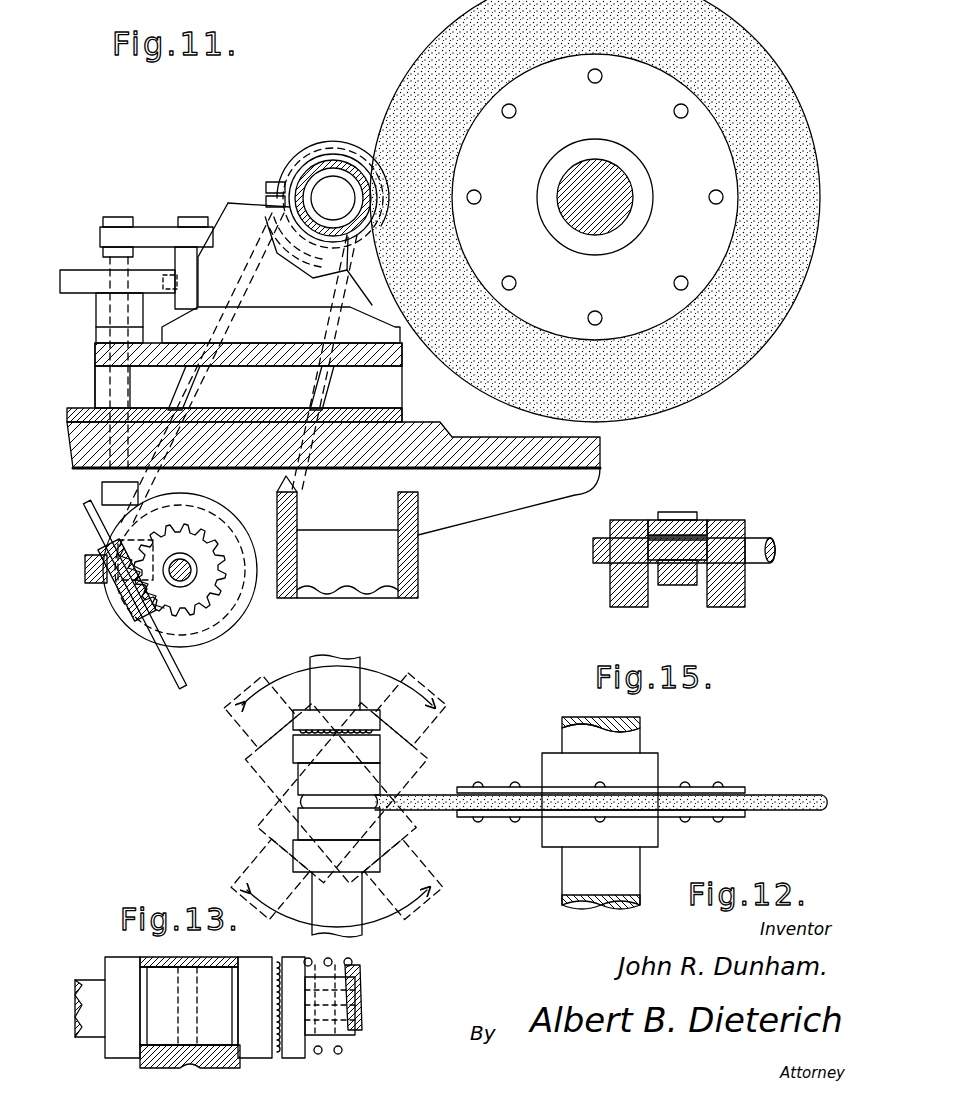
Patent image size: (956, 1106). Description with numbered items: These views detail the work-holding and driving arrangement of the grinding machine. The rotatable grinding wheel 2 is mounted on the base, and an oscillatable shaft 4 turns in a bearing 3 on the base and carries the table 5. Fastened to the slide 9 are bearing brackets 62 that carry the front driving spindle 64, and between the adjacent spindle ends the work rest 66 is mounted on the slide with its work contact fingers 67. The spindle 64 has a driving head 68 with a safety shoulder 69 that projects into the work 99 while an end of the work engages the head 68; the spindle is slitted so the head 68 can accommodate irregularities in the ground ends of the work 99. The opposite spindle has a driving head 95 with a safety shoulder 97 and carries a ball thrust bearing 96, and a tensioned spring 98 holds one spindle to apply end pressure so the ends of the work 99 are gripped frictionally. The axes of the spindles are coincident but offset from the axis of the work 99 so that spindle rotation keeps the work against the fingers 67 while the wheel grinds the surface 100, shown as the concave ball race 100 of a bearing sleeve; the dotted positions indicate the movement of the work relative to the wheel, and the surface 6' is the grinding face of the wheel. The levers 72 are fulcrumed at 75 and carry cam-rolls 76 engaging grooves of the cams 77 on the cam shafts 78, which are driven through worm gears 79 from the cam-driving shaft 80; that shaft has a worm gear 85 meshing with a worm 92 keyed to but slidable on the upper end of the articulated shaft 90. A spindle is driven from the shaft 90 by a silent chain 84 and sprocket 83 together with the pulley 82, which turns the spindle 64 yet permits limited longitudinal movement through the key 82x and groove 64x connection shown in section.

In FIG. 11, the grinding wheel 2 is at (700, 395).
In FIG. 12, the grinding wheel 2 is at (760, 813).
In FIG. 11, the bearing 3 is at (420, 572).
In FIG. 11, the oscillatable shaft 4 is at (337, 537).
In FIG. 11, the table 5 is at (402, 425).
In FIG. 11, the wheel face 6' is at (421, 255).
In FIG. 11, the slide 9 is at (378, 402).
In FIG. 15, the bearing brackets 62 is at (722, 528).
In FIG. 15, the front driving spindle 64 is at (600, 555).
In FIG. 13, the front driving spindle 64 is at (95, 1045).
In FIG. 15, the groove 64x is at (750, 565).
In FIG. 11, the work rest 66 is at (259, 391).
In FIG. 11, the work contact fingers 67 is at (272, 208).
In FIG. 11, the driving head 68 is at (312, 152).
In FIG. 12, the driving head 68 is at (360, 870).
In FIG. 13, the driving head 68 is at (122, 1007).
In FIG. 11, the safety shoulder 69 is at (348, 200).
In FIG. 13, the safety shoulder 69 is at (158, 1035).
In FIG. 11, the levers 72 is at (152, 233).
In FIG. 11, the fulcrum 75 is at (207, 217).
In FIG. 11, the cam-rolls 76 is at (117, 268).
In FIG. 11, the cams 77 is at (82, 286).
In FIG. 11, the cam shafts 78 is at (115, 380).
In FIG. 11, the worm gears 79 is at (93, 583).
In FIG. 11, the cam-driving shaft 80 is at (195, 552).
In FIG. 11, the pulley 82 is at (290, 178).
In FIG. 15, the pulley 82 is at (680, 522).
In FIG. 15, the key 82x is at (660, 535).
In FIG. 11, the sprocket 83 is at (198, 636).
In FIG. 11, the silent chain 84 is at (315, 383).
In FIG. 11, the worm gear 85 is at (198, 610).
In FIG. 11, the articulated shaft 90 is at (134, 606).
In FIG. 11, the worm 92 is at (123, 610).
In FIG. 12, the driving head 95 is at (300, 748).
In FIG. 13, the driving head 95 is at (255, 1007).
In FIG. 12, the thrust bearing 96 is at (310, 725).
In FIG. 13, the thrust bearing 96 is at (285, 1050).
In FIG. 13, the safety shoulder 97 is at (230, 1052).
In FIG. 13, the spring 98 is at (355, 970).
In FIG. 11, the work 99 is at (356, 163).
In FIG. 12, the work 99 is at (310, 823).
In FIG. 13, the work 99 is at (230, 965).
In FIG. 11, the ball race 100 is at (352, 224).
In FIG. 12, the ball race 100 is at (305, 803).
In FIG. 13, the ball race 100 is at (190, 945).